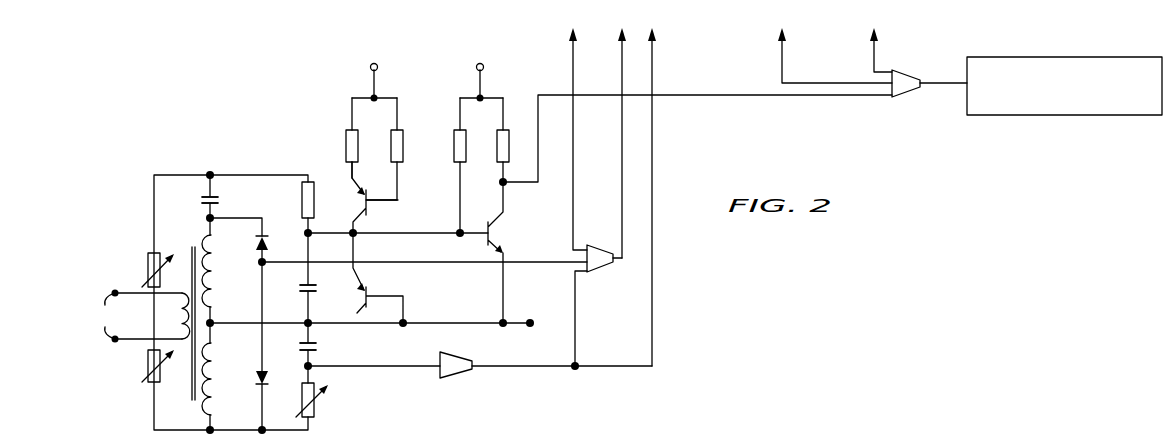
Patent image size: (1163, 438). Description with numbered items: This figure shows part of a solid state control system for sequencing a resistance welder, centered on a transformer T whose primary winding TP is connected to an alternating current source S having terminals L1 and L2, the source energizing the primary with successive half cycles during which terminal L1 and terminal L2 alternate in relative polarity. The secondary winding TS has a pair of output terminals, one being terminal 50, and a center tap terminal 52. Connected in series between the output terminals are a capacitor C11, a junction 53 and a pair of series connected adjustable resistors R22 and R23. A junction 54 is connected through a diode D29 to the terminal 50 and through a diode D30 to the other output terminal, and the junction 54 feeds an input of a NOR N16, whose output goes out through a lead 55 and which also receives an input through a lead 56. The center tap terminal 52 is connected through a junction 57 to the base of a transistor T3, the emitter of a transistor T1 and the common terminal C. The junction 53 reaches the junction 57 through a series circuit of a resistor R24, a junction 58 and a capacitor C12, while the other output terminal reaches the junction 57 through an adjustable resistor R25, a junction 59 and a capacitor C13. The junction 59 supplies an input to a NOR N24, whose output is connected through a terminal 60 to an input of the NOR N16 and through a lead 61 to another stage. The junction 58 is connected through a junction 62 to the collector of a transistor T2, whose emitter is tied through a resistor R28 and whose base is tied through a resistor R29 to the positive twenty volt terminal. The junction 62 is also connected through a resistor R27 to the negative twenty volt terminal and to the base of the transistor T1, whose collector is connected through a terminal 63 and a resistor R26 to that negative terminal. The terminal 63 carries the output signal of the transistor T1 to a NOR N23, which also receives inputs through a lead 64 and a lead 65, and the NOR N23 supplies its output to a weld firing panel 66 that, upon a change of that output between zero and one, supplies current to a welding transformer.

The output terminal 50 is at (213, 221).
The center tap terminal 52 is at (214, 326).
The junction 53 is at (209, 176).
The junction 54 is at (264, 265).
The lead 55 is at (623, 63).
The lead 56 is at (574, 61).
The junction 57 is at (313, 326).
The junction 58 is at (312, 236).
The junction 59 is at (313, 366).
The terminal 60 is at (576, 369).
The lead 61 is at (652, 60).
The junction 62 is at (358, 231).
The terminal 63 is at (507, 186).
The lead 64 is at (783, 61).
The lead 65 is at (875, 51).
The weld firing panel 66 is at (1092, 116).
The adjustable resistor R22 is at (149, 256).
The adjustable resistor R23 is at (150, 384).
The resistor R24 is at (301, 204).
The adjustable resistor R25 is at (318, 403).
The resistor R26 is at (507, 133).
The resistor R27 is at (465, 133).
The resistor R28 is at (357, 134).
The resistor R29 is at (403, 133).
The capacitor C11 is at (204, 202).
The capacitor C12 is at (304, 291).
The capacitor C13 is at (303, 345).
The diode D29 is at (259, 244).
The diode D30 is at (259, 375).
The transformer T is at (193, 230).
The primary winding TP is at (187, 291).
The secondary winding TS is at (212, 290).
The transistor T1 is at (493, 234).
The transistor T2 is at (364, 198).
The transistor T3 is at (367, 292).
The NOR N16 is at (599, 272).
The NOR N23 is at (906, 93).
The NOR N24 is at (462, 372).
The alternating current source S is at (107, 316).
The terminal L1 is at (113, 292).
The terminal L2 is at (115, 341).
The common terminal C is at (534, 323).